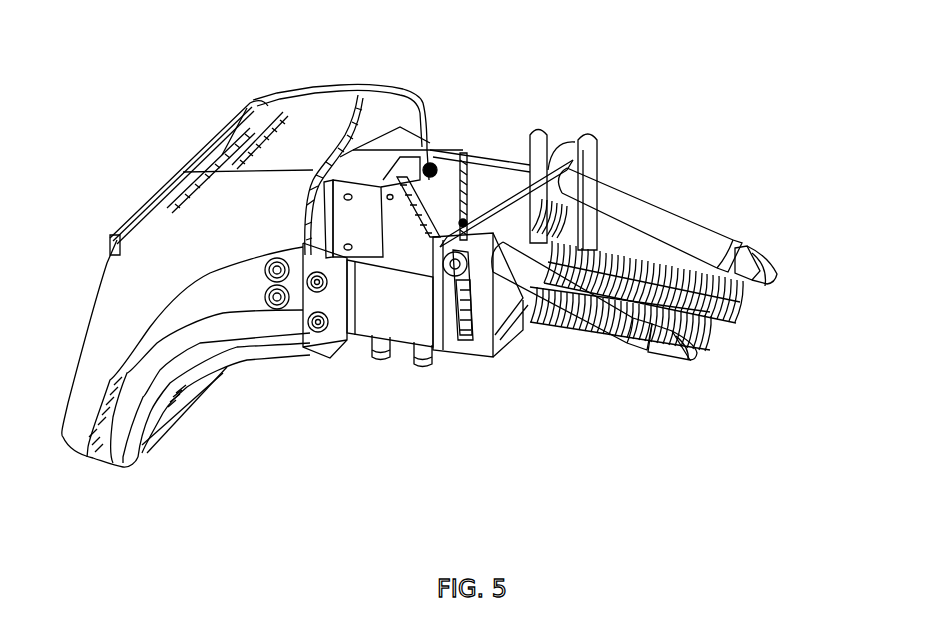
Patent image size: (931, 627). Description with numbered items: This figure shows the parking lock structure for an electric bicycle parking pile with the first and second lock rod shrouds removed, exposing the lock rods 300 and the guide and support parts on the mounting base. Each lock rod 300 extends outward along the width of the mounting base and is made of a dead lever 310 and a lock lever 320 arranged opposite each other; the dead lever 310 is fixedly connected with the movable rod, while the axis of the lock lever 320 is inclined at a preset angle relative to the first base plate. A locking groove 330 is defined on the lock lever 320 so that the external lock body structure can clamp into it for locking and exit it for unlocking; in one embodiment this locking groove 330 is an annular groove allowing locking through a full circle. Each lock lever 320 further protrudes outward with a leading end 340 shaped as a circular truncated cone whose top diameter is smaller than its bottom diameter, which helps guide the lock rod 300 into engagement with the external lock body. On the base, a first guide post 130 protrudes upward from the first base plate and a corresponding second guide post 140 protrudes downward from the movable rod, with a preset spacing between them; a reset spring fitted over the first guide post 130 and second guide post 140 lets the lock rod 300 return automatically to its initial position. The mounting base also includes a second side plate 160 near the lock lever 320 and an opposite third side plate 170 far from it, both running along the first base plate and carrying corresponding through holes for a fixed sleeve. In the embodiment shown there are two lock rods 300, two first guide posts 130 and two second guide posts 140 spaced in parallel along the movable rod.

The first guide post 130 is at (460, 340).
The second guide post 140 is at (540, 177).
The second side plate 160 is at (507, 320).
The third side plate 170 is at (410, 360).
The lock rod 300 is at (653, 207).
The dead lever 310 is at (578, 140).
The lock lever 320 is at (722, 243).
The locking groove 330 is at (645, 342).
The leading end 340 is at (685, 362).